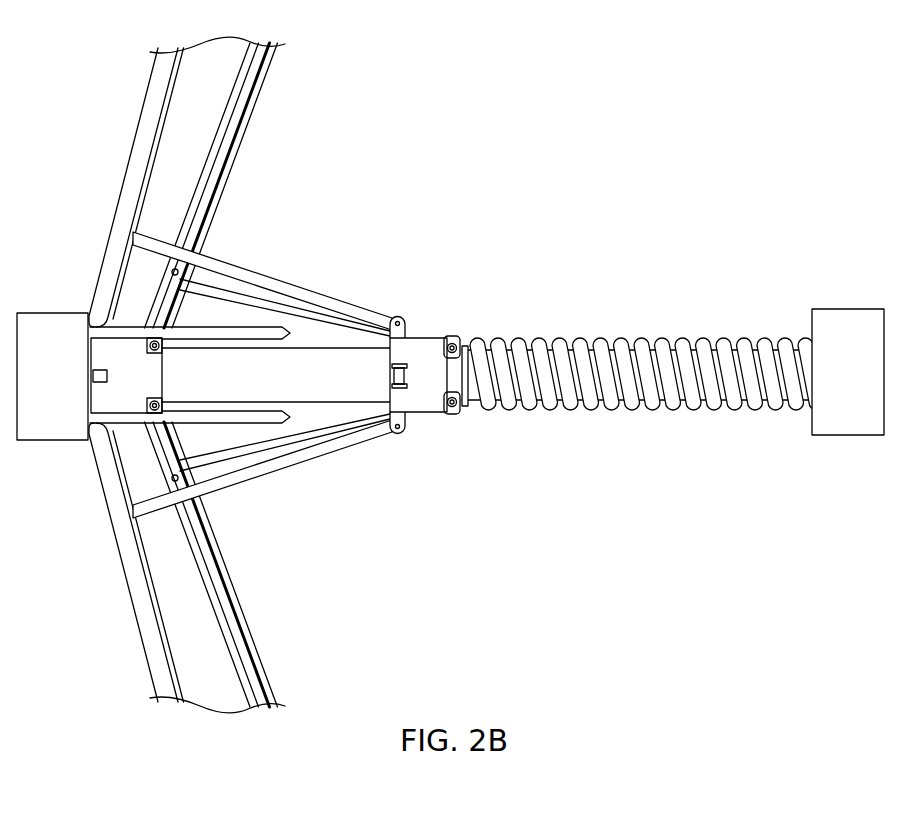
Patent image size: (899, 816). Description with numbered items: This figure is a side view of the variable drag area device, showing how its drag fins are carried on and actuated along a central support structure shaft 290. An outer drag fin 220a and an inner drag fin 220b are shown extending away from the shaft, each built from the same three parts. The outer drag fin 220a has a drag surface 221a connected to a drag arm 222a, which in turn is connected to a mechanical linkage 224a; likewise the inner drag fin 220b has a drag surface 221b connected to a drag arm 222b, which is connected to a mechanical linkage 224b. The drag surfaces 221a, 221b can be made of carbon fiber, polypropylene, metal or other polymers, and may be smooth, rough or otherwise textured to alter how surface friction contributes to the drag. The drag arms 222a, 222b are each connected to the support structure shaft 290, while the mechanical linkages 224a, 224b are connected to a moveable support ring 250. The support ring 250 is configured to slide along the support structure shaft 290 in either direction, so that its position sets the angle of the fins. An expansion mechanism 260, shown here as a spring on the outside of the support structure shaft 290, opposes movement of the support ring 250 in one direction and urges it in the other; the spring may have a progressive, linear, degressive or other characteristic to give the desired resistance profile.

The outer drag fin 220a is at (240, 172).
The drag surface 221a is at (157, 105).
The drag arm 222a is at (176, 80).
The mechanical linkage 224a is at (267, 281).
The inner drag fin 220b is at (240, 585).
The drag surface 221b is at (230, 638).
The drag arm 222b is at (227, 593).
The mechanical linkage 224b is at (235, 460).
The support ring 250 is at (417, 350).
The expansion mechanism 260 is at (677, 408).
The support structure shaft 290 is at (318, 383).